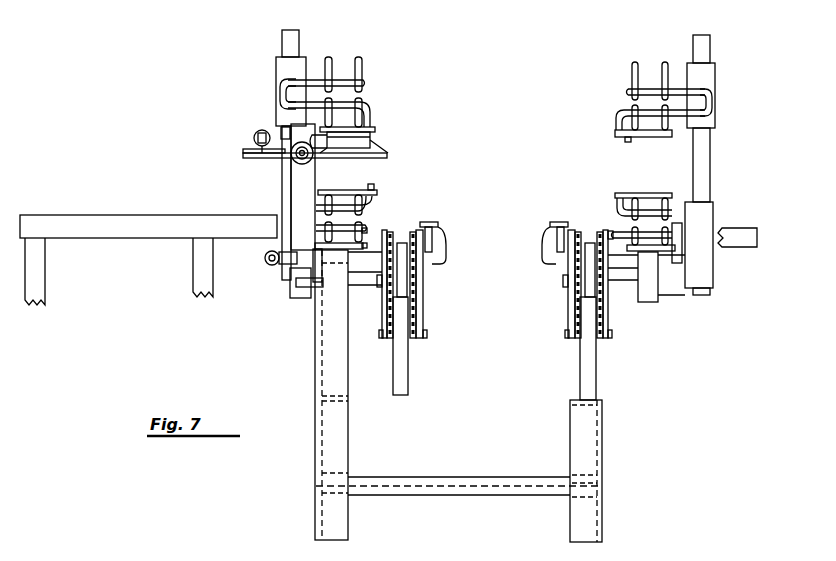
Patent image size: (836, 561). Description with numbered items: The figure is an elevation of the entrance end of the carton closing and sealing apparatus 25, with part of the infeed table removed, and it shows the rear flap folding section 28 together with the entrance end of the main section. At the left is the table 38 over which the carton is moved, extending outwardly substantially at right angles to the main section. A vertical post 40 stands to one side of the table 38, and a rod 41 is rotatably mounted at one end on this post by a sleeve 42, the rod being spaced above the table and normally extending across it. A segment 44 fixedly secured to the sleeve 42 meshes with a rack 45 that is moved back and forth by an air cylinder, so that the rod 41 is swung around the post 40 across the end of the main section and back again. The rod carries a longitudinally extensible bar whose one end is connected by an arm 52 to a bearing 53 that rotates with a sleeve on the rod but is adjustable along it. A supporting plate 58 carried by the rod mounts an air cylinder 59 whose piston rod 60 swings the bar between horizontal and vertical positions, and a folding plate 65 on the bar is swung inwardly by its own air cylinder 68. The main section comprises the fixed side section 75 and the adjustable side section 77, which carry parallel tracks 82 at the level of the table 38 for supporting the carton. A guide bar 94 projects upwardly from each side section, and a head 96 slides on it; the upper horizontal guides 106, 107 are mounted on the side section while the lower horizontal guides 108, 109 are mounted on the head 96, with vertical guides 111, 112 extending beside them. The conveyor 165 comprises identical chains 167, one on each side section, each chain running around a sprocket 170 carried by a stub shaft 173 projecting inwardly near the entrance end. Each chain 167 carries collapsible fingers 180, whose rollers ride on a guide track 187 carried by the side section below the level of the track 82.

The apparatus 25 is at (471, 162).
The rear flap folding section 28 is at (265, 211).
The table 38 is at (133, 213).
The vertical post 40 is at (278, 112).
The rod 41 is at (296, 166).
The sleeve 42 is at (282, 206).
The segment 44 is at (267, 256).
The rack 45 is at (272, 266).
The arm 52 is at (283, 134).
The bearing 53 is at (295, 161).
The supporting plate 58 is at (386, 156).
The air cylinder 59 is at (368, 125).
The piston rod 60 is at (363, 224).
The folding plate 65 is at (245, 153).
The air cylinder 68 is at (256, 137).
The side section 75 is at (357, 91).
The side section 77 is at (624, 82).
The tracks 82 is at (550, 226).
The guide bar 94 is at (282, 40).
The head 96 is at (276, 66).
The upper horizontal guide 106 is at (364, 86).
The upper horizontal guide 107 is at (364, 107).
The lower horizontal guide 108 is at (370, 207).
The lower horizontal guide 109 is at (366, 229).
The vertical guide 111 is at (370, 141).
The vertical guide 112 is at (372, 190).
The conveyor 165 is at (440, 267).
The chain 167 is at (419, 283).
The sprocket 170 is at (417, 328).
The stub shaft 173 is at (363, 289).
The collapsible finger 180 is at (405, 369).
The guide track 187 is at (406, 243).